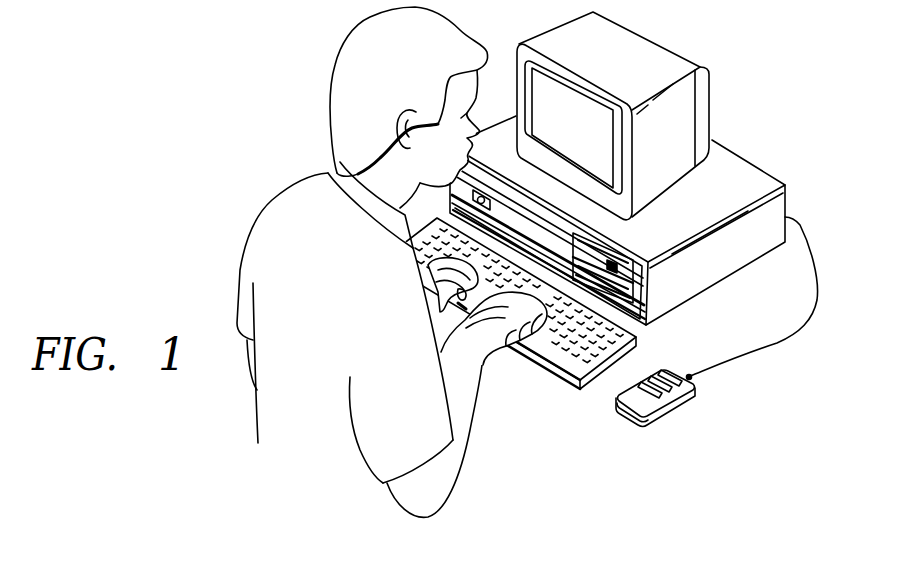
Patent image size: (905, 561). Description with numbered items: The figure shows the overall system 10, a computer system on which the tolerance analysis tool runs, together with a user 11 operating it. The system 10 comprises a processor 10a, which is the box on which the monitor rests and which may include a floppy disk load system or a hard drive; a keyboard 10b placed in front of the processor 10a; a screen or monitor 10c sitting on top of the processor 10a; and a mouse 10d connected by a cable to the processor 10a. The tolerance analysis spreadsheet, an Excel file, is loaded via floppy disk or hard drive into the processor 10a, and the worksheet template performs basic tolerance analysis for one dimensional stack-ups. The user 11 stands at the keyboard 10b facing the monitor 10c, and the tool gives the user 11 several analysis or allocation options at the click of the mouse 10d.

The system 10 is at (602, 228).
The processor 10a is at (758, 175).
The keyboard 10b is at (560, 367).
The screen or monitor 10c is at (667, 37).
The mouse 10d is at (677, 413).
The user 11 is at (337, 35).